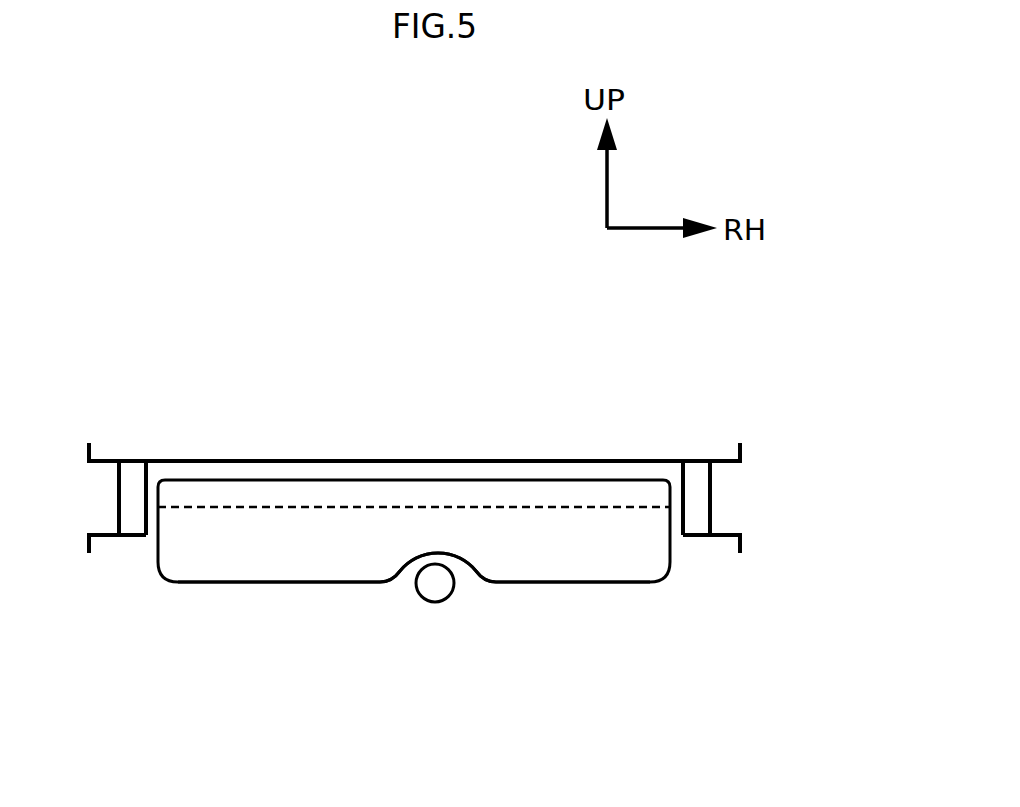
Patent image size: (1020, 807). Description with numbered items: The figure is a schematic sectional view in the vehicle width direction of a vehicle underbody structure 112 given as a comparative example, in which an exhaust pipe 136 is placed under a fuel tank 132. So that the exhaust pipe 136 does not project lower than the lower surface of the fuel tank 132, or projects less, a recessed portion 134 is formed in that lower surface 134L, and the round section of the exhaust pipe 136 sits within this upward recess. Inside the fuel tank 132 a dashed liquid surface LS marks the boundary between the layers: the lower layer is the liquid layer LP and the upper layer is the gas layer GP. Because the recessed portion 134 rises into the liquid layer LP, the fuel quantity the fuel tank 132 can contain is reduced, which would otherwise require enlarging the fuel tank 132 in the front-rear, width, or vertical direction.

The vehicle underbody structure 112 is at (303, 670).
The fuel tank 132 is at (233, 586).
The recessed portion 134 is at (399, 580).
The lower surface 134L is at (574, 584).
The exhaust pipe 136 is at (455, 602).
The liquid surface LS is at (530, 505).
The gas layer GP is at (605, 495).
The liquid layer LP is at (624, 548).